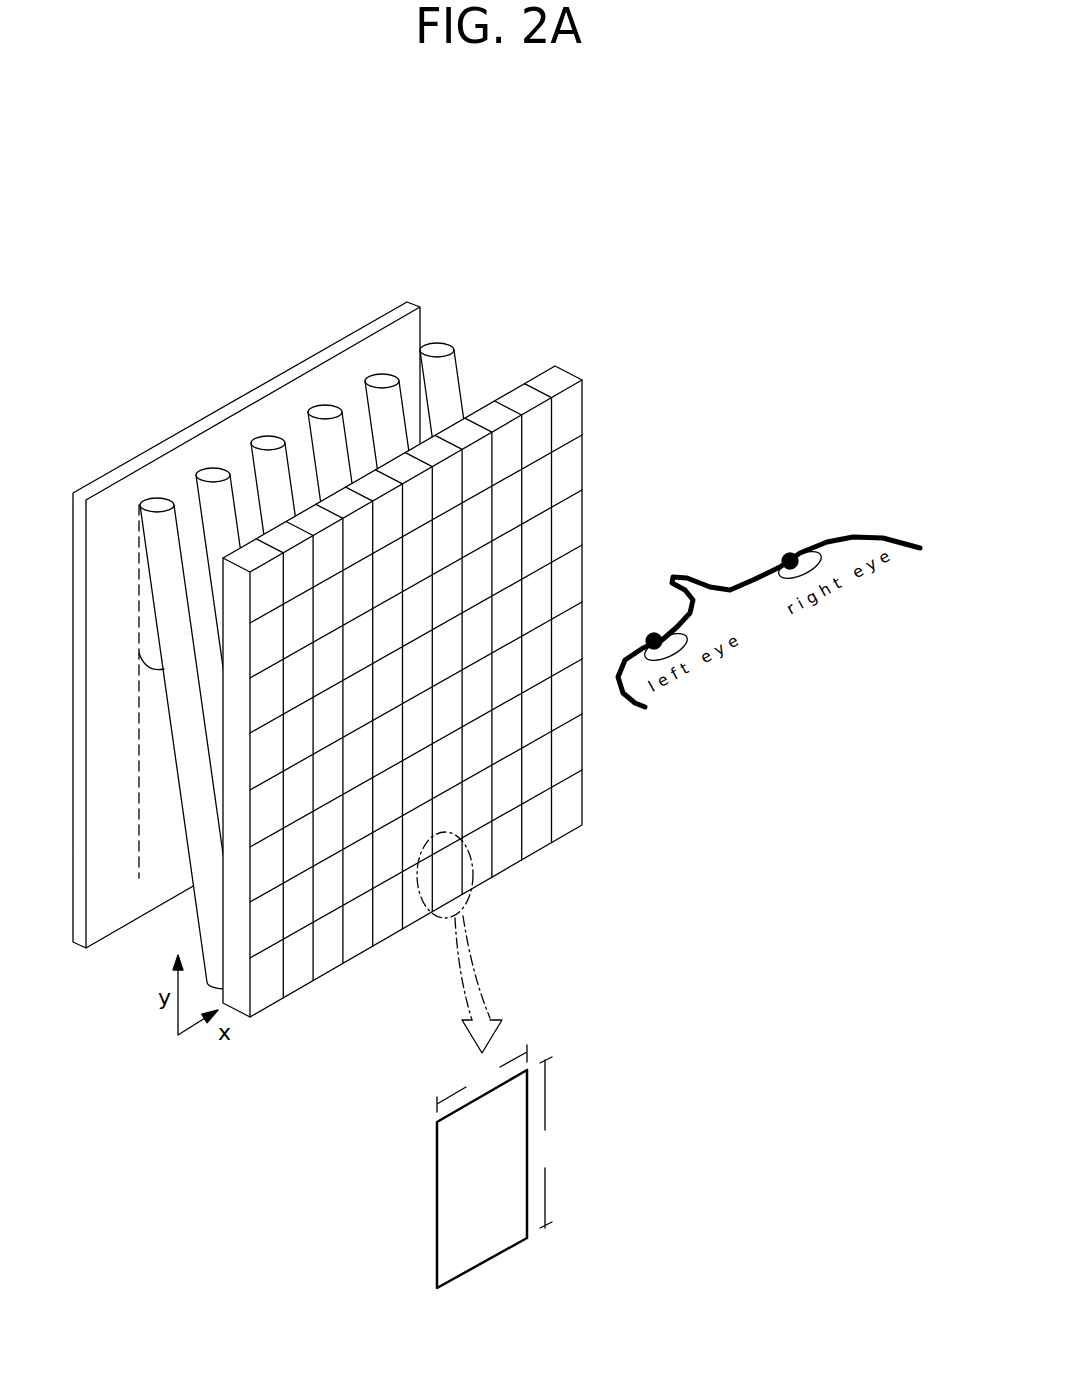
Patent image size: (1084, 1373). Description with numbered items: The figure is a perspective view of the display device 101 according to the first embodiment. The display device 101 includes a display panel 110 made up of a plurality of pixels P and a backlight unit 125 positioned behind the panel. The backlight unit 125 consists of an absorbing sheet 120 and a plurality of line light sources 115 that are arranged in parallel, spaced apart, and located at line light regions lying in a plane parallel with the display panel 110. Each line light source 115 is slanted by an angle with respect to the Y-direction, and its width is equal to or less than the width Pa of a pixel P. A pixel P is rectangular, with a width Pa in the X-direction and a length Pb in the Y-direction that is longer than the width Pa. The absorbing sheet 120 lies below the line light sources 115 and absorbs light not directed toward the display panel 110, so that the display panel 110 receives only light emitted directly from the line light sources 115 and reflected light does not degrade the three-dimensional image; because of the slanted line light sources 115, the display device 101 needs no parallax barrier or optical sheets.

The display device 101 is at (662, 177).
The display panel 110 is at (572, 356).
The line light sources 115 is at (448, 322).
The absorbing sheet 120 is at (420, 290).
The backlight unit 125 is at (552, 218).
The pixel P is at (582, 495).
The width Pa is at (482, 1078).
The length Pb is at (547, 1142).